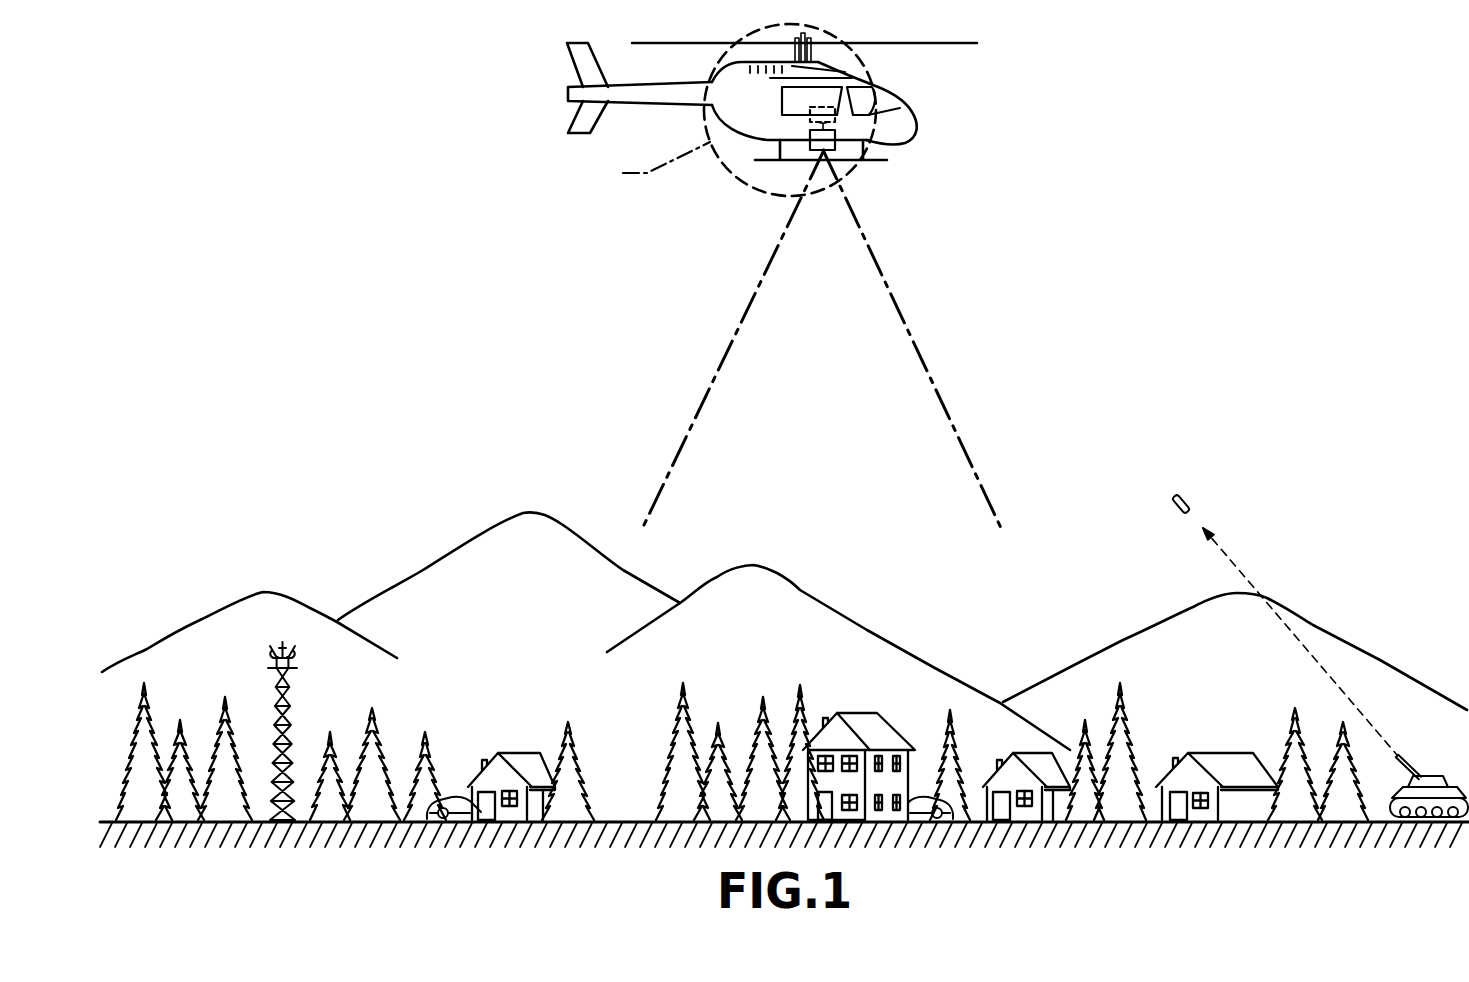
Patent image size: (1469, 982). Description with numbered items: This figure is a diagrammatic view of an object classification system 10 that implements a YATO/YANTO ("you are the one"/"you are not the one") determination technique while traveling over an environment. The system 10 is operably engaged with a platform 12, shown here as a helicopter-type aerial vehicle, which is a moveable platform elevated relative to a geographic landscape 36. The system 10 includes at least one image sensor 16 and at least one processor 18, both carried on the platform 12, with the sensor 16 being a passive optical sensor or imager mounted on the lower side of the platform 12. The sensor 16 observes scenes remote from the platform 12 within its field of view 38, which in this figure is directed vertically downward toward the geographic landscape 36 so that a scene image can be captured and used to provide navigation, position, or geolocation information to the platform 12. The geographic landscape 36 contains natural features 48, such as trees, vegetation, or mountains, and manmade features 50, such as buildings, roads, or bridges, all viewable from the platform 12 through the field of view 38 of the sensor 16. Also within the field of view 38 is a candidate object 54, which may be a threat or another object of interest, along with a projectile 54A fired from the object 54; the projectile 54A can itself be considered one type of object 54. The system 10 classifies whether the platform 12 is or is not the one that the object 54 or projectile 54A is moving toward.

The object classification system 10 is at (803, 153).
The platform 12 is at (906, 78).
The image sensor 16 is at (832, 151).
The processor 18 is at (838, 122).
The geographic landscape 36 is at (617, 820).
The field of view 38 is at (718, 366).
The natural features 48 is at (672, 724).
The manmade features 50 is at (519, 762).
The candidate object 54 is at (1428, 777).
The projectile 54A is at (1180, 497).